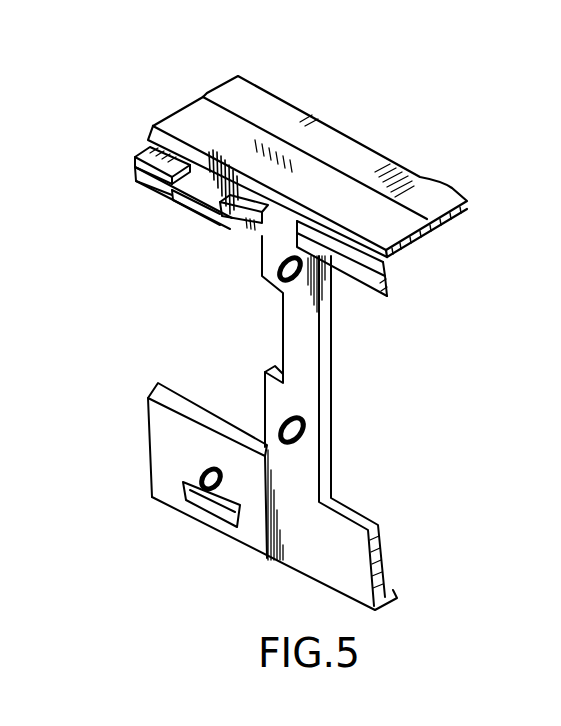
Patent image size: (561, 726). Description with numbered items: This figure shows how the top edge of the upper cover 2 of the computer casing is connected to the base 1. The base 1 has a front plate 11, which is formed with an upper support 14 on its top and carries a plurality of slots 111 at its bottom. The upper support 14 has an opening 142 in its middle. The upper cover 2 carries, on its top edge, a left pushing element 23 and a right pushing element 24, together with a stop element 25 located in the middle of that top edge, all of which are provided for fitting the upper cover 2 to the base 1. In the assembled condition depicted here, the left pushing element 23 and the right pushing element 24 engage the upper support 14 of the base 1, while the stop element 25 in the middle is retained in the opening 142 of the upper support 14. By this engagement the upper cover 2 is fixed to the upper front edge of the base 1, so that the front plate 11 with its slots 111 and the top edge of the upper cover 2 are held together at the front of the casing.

The base 1 is at (332, 422).
The front plate 11 is at (168, 437).
The slots 111 is at (183, 497).
The upper support 14 is at (236, 203).
The opening 142 is at (228, 182).
The upper cover 2 is at (350, 142).
The left pushing element 23 is at (151, 146).
The right pushing element 24 is at (390, 283).
The stop element 25 is at (208, 210).